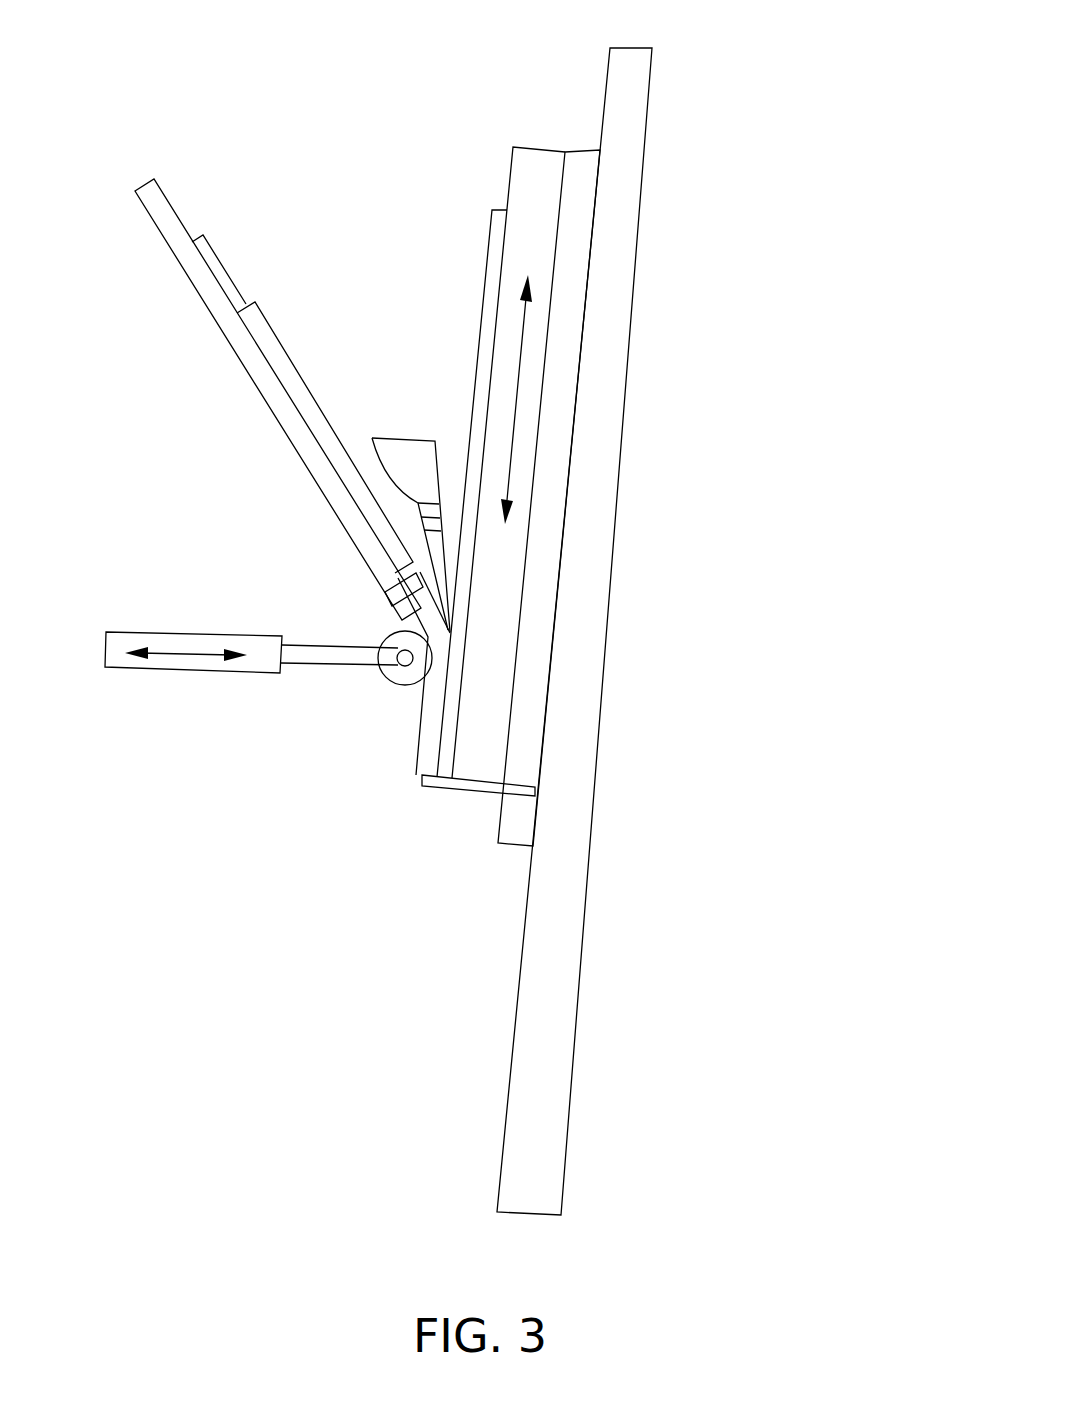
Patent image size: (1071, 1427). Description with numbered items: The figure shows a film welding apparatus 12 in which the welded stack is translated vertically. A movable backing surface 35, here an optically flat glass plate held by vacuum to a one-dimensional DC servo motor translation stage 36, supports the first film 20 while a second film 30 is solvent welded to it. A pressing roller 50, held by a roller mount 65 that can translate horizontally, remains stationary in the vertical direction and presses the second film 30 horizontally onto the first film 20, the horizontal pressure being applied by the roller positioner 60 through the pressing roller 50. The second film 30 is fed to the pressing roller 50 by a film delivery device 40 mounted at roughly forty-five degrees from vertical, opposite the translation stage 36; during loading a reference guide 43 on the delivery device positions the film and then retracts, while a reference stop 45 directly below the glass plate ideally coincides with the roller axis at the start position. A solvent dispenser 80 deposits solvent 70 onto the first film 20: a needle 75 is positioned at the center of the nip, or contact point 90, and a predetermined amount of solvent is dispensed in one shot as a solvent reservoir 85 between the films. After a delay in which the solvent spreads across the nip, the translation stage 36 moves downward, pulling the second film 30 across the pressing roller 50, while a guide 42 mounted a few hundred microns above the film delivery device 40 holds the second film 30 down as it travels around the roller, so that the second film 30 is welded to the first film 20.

The film welding apparatus 12 is at (858, 104).
The first film 20 is at (485, 268).
The second film 30 is at (227, 272).
The movable backing surface 35 is at (520, 258).
The translation stage 36 is at (573, 200).
The film delivery device 40 is at (205, 290).
The guide 42 is at (452, 637).
The reference guide 43 is at (267, 315).
The reference stop 45 is at (478, 798).
The pressing roller 50 is at (403, 687).
The roller positioner 60 is at (153, 670).
The roller mount 65 is at (276, 705).
The solvent 70 is at (415, 460).
The needle 75 is at (425, 549).
The solvent dispenser 80 is at (425, 545).
The solvent reservoir 85 is at (450, 655).
The contact point 90 is at (445, 668).